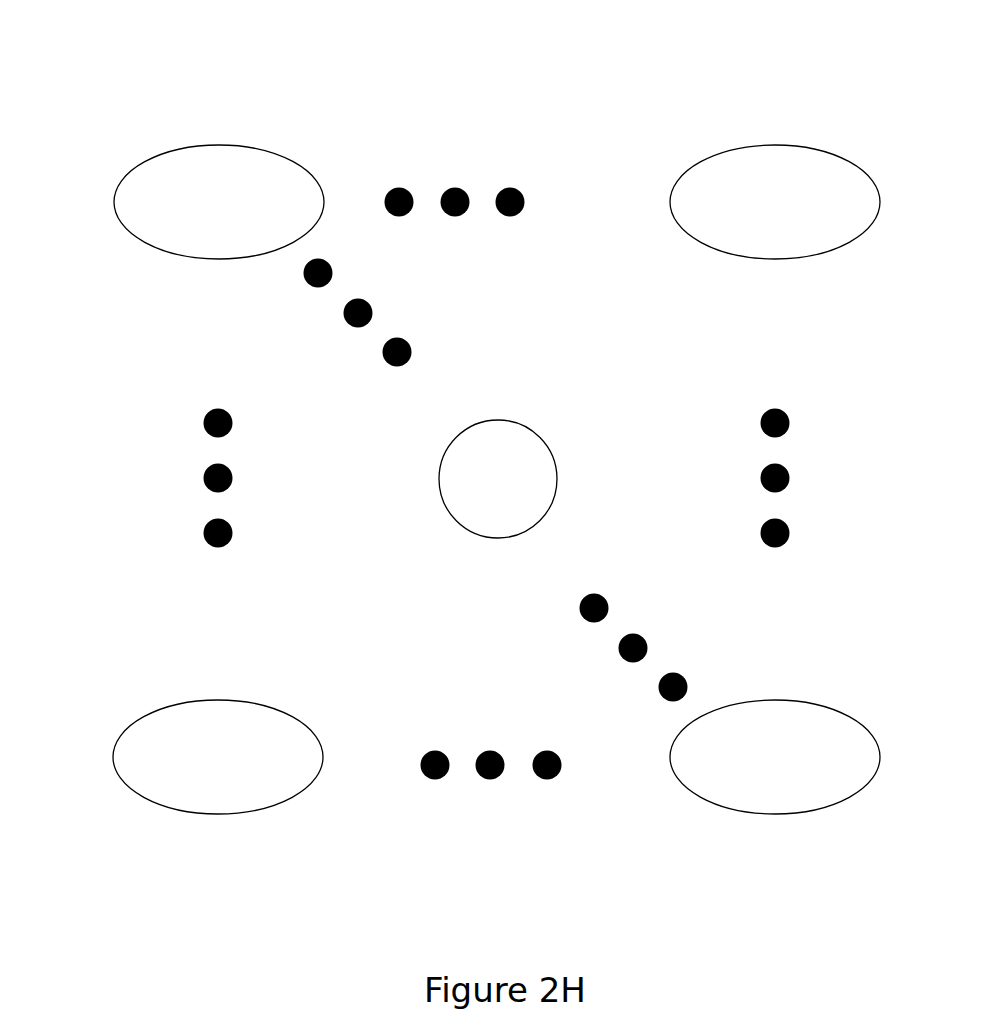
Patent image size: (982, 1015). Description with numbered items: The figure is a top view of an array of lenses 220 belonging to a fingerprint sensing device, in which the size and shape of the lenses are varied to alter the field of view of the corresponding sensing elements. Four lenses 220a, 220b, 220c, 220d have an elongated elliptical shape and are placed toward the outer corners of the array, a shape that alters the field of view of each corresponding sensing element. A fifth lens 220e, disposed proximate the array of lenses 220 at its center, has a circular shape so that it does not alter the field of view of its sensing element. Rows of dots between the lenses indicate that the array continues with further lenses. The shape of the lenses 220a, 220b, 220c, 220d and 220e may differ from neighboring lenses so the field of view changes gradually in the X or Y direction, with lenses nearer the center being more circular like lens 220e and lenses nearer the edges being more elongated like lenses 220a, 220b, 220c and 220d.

The array of lenses 220 is at (132, 92).
The lens 220a is at (190, 214).
The lens 220b is at (746, 214).
The lens 220c is at (746, 768).
The lens 220d is at (189, 768).
The lens 220e is at (469, 490).